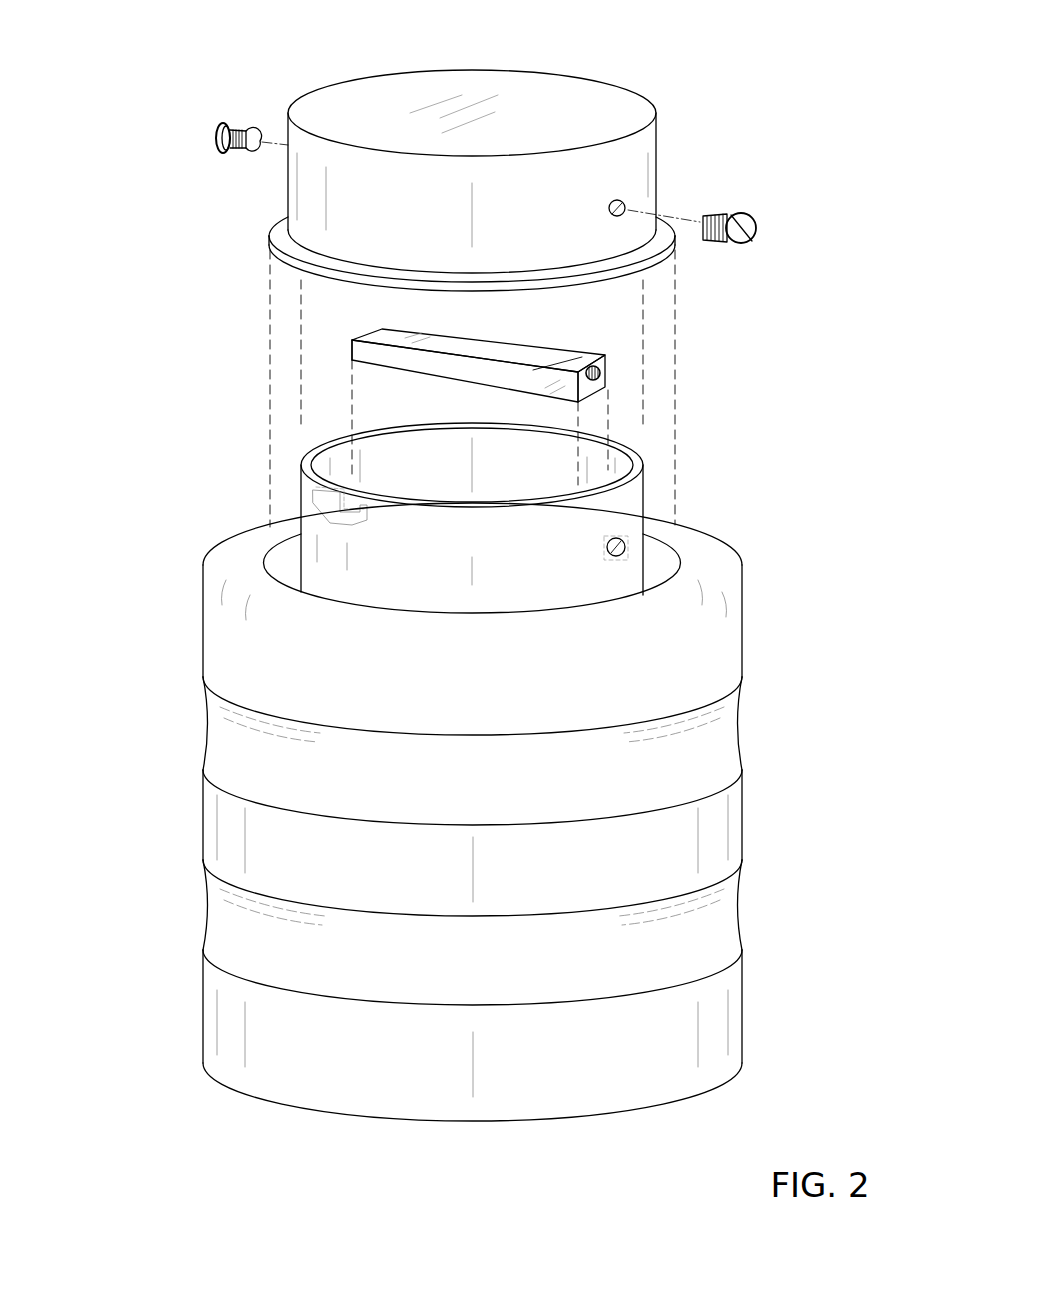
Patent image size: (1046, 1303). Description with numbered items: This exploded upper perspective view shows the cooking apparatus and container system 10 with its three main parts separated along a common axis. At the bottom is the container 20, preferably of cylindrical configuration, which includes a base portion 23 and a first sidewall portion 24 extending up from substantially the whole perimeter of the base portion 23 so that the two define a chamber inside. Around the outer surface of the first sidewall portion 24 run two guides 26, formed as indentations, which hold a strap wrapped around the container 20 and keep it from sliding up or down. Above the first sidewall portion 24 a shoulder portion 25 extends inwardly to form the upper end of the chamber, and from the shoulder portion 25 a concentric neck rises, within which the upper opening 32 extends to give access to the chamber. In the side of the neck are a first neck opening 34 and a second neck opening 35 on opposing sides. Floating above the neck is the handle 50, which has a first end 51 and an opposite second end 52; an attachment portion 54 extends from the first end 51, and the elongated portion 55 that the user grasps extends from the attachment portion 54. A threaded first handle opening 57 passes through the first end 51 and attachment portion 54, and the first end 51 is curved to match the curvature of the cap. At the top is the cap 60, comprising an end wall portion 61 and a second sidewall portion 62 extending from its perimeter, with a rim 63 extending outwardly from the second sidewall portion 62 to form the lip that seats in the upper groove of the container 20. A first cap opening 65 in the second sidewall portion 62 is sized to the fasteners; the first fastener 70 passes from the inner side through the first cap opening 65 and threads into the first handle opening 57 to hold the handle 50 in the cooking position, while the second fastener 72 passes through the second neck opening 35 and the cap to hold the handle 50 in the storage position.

The cooking apparatus and container system 10 is at (186, 1168).
The container 20 is at (758, 640).
The base portion 23 is at (476, 1124).
The first sidewall portion 24 is at (747, 840).
The shoulder portion 25 is at (212, 575).
The guide 26 is at (205, 742).
The upper opening 32 is at (640, 448).
The first neck opening 34 is at (625, 545).
The second neck opening 35 is at (312, 487).
The handle 50 is at (482, 332).
The first end 51 is at (608, 340).
The second end 52 is at (360, 336).
The attachment portion 54 is at (570, 347).
The elongated portion 55 is at (400, 355).
The first handle opening 57 is at (622, 374).
The cap 60 is at (597, 70).
The end wall portion 61 is at (414, 84).
The second sidewall portion 62 is at (645, 147).
The rim 63 is at (287, 220).
The first cap opening 65 is at (622, 202).
The first fastener 70 is at (757, 238).
The second fastener 72 is at (213, 140).